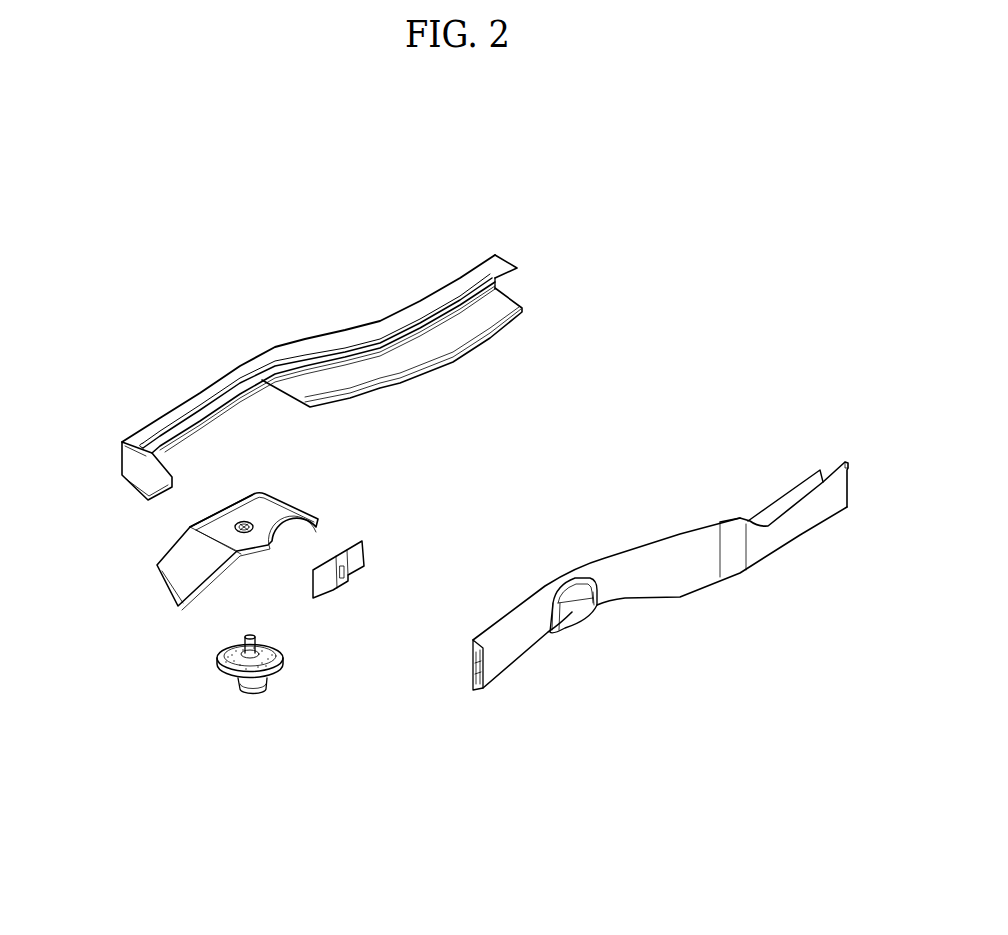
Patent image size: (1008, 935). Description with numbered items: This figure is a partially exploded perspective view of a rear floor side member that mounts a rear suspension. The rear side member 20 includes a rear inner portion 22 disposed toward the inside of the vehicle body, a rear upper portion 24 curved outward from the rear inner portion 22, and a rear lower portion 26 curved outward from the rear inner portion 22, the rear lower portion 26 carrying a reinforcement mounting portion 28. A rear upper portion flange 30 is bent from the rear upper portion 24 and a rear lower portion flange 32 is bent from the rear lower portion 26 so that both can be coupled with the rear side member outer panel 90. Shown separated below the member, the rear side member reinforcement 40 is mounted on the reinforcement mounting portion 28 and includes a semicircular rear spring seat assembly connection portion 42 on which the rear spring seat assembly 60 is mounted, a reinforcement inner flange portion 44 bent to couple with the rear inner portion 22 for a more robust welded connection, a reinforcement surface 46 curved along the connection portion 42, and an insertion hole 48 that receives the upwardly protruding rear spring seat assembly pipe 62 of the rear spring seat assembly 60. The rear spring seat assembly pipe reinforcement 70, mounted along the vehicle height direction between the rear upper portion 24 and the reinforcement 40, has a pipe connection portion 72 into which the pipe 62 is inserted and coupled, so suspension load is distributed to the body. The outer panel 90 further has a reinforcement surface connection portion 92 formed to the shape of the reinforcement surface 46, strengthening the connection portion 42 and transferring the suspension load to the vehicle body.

The rear side member 20 is at (660, 585).
The rear inner portion 22 is at (130, 455).
The rear upper portion 24 is at (500, 263).
The rear lower portion 26 is at (419, 347).
The reinforcement mounting portion 28 is at (243, 412).
The rear upper portion flange 30 is at (355, 349).
The rear lower portion flange 32 is at (457, 351).
The rear side member reinforcement 40 is at (203, 545).
The rear spring seat assembly connection portion 42 is at (257, 538).
The reinforcement inner flange portion 44 is at (242, 500).
The reinforcement surface 46 is at (243, 554).
The insertion hole 48 is at (239, 527).
The rear spring seat assembly 60 is at (277, 695).
The rear spring seat assembly pipe 62 is at (256, 642).
The rear spring seat assembly pipe reinforcement 70 is at (380, 538).
The pipe connection portion 72 is at (368, 551).
The rear side member outer panel 90 is at (775, 558).
The reinforcement surface connection portion 92 is at (581, 619).